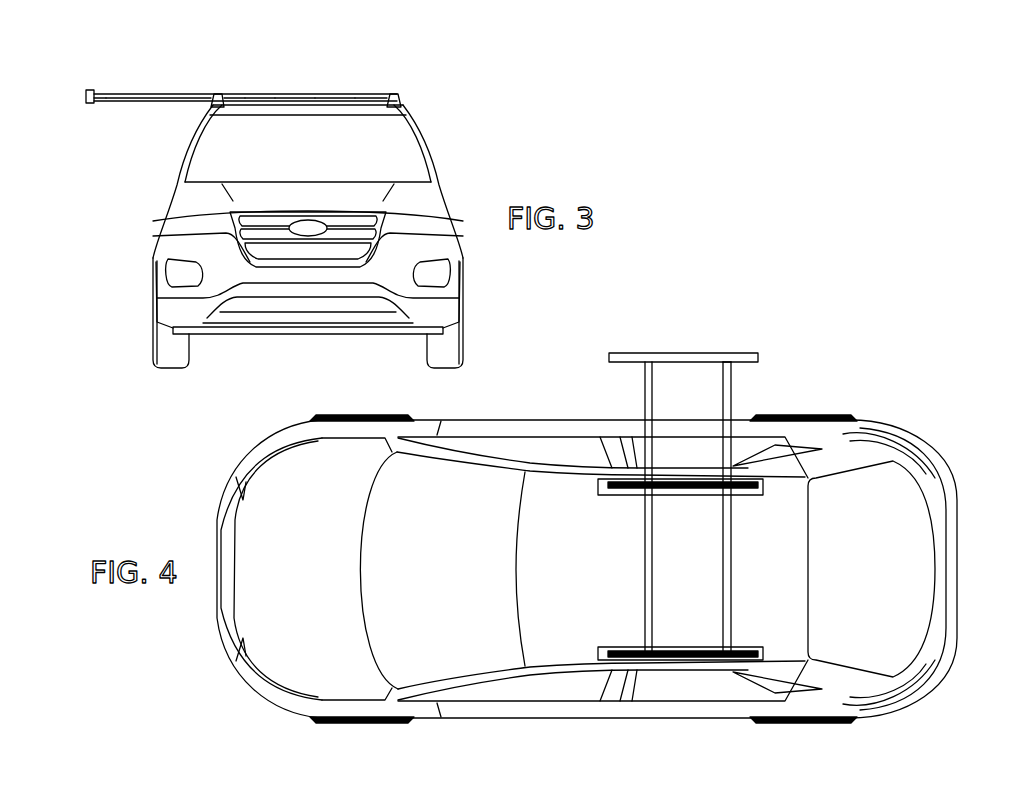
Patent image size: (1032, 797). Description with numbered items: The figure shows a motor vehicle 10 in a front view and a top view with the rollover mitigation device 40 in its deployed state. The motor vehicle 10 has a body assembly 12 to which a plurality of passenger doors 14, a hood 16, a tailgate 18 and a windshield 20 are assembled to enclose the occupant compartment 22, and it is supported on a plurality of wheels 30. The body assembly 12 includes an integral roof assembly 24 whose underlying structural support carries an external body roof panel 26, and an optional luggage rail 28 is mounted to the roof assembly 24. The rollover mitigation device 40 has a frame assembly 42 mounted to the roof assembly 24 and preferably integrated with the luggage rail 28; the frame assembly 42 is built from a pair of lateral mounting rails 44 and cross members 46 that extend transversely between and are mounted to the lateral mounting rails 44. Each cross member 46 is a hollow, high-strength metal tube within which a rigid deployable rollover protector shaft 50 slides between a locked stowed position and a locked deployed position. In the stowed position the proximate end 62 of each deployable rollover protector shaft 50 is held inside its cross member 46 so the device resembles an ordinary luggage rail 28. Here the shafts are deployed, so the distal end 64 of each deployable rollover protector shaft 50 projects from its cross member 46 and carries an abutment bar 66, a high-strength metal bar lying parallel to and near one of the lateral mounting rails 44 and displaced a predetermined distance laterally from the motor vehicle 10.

In FIG. 3, the motor vehicle 10 is at (484, 90).
In FIG. 4, the motor vehicle 10 is at (890, 400).
In FIG. 3, the body assembly 12 is at (447, 208).
In FIG. 4, the body assembly 12 is at (815, 710).
In FIG. 4, the passenger doors 14 is at (530, 425).
In FIG. 3, the hood 16 is at (190, 195).
In FIG. 4, the hood 16 is at (332, 672).
In FIG. 4, the tailgate 18 is at (897, 475).
In FIG. 3, the windshield 20 is at (203, 157).
In FIG. 4, the windshield 20 is at (425, 672).
In FIG. 4, the occupant compartment 22 is at (487, 695).
In FIG. 3, the roof assembly 24 is at (332, 102).
In FIG. 4, the roof assembly 24 is at (778, 490).
In FIG. 3, the external body roof panel 26 is at (257, 102).
In FIG. 4, the external body roof panel 26 is at (778, 645).
In FIG. 3, the luggage rail 28 is at (233, 92).
In FIG. 4, the luggage rail 28 is at (660, 652).
In FIG. 3, the wheels 30 is at (160, 348).
In FIG. 3, the rollover mitigation device 40 is at (90, 88).
In FIG. 4, the rollover mitigation device 40 is at (730, 320).
In FIG. 3, the frame assembly 42 is at (372, 97).
In FIG. 4, the frame assembly 42 is at (736, 572).
In FIG. 3, the lateral mounting rails 44 is at (215, 93).
In FIG. 4, the lateral mounting rails 44 is at (603, 488).
In FIG. 3, the cross members 46 is at (290, 97).
In FIG. 4, the cross members 46 is at (651, 566).
In FIG. 3, the deployable rollover protector shaft 50 is at (142, 92).
In FIG. 4, the deployable rollover protector shaft 50 is at (643, 381).
In FIG. 3, the proximate end 62 is at (183, 104).
In FIG. 3, the distal end 64 is at (103, 103).
In FIG. 3, the abutment bar 66 is at (86, 105).
In FIG. 4, the abutment bar 66 is at (647, 352).